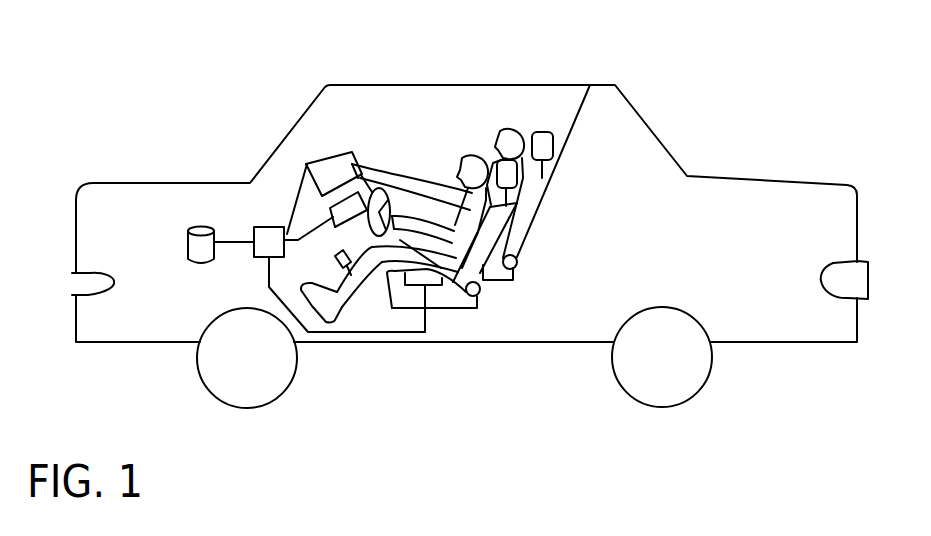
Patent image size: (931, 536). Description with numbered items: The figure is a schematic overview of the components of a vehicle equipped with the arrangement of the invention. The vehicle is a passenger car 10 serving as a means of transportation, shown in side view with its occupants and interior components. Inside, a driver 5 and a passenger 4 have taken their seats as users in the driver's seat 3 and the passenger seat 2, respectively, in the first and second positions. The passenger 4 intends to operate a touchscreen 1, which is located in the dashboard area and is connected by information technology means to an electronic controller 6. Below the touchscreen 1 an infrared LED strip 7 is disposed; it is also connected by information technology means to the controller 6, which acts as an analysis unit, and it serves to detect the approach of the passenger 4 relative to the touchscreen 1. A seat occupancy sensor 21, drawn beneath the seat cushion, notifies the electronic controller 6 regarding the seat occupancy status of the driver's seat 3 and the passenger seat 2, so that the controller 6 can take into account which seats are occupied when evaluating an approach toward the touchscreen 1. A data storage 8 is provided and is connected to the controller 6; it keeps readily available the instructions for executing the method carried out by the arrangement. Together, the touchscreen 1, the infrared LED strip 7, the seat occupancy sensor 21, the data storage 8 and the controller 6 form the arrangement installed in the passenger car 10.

The passenger car 10 is at (722, 113).
The touchscreen 1 is at (343, 153).
The infrared LED strip 7 is at (346, 202).
The electronic controller 6 is at (271, 227).
The data storage 8 is at (200, 228).
The driver 5 is at (465, 157).
The passenger 4 is at (510, 128).
The driver's seat 3 is at (477, 255).
The seat occupancy sensor 21 is at (433, 285).
The passenger seat 2 is at (547, 177).